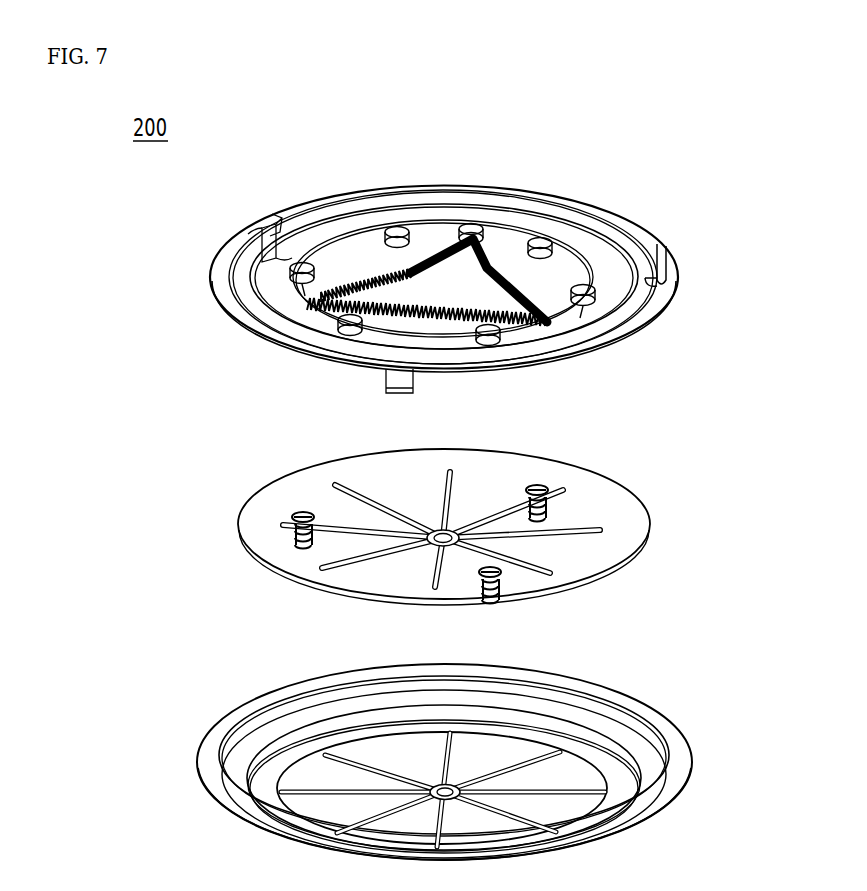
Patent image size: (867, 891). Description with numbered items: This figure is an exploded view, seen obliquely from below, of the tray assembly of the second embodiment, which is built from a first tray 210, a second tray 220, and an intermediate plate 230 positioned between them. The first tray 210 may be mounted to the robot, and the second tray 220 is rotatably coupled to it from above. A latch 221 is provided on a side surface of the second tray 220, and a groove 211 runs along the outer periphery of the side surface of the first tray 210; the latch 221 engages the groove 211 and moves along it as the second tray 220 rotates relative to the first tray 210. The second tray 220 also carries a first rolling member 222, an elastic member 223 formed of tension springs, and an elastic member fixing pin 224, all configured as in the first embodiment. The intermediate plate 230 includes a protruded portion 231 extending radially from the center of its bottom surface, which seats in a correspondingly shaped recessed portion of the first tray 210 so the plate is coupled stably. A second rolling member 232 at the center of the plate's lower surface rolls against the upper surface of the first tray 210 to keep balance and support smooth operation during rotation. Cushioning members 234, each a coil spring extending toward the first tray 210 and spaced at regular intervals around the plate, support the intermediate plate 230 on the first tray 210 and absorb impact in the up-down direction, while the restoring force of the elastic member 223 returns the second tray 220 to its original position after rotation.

The first tray 210 is at (683, 728).
The groove 211 is at (236, 768).
The second tray 220 is at (633, 215).
The latch 221 is at (270, 236).
The first rolling member 222 is at (542, 238).
The elastic member 223 is at (437, 250).
The elastic member fixing pin 224 is at (471, 234).
The intermediate plate 230 is at (632, 488).
The protruded portion 231 is at (565, 531).
The second rolling member 232 is at (435, 552).
The cushioning member 234 is at (497, 598).